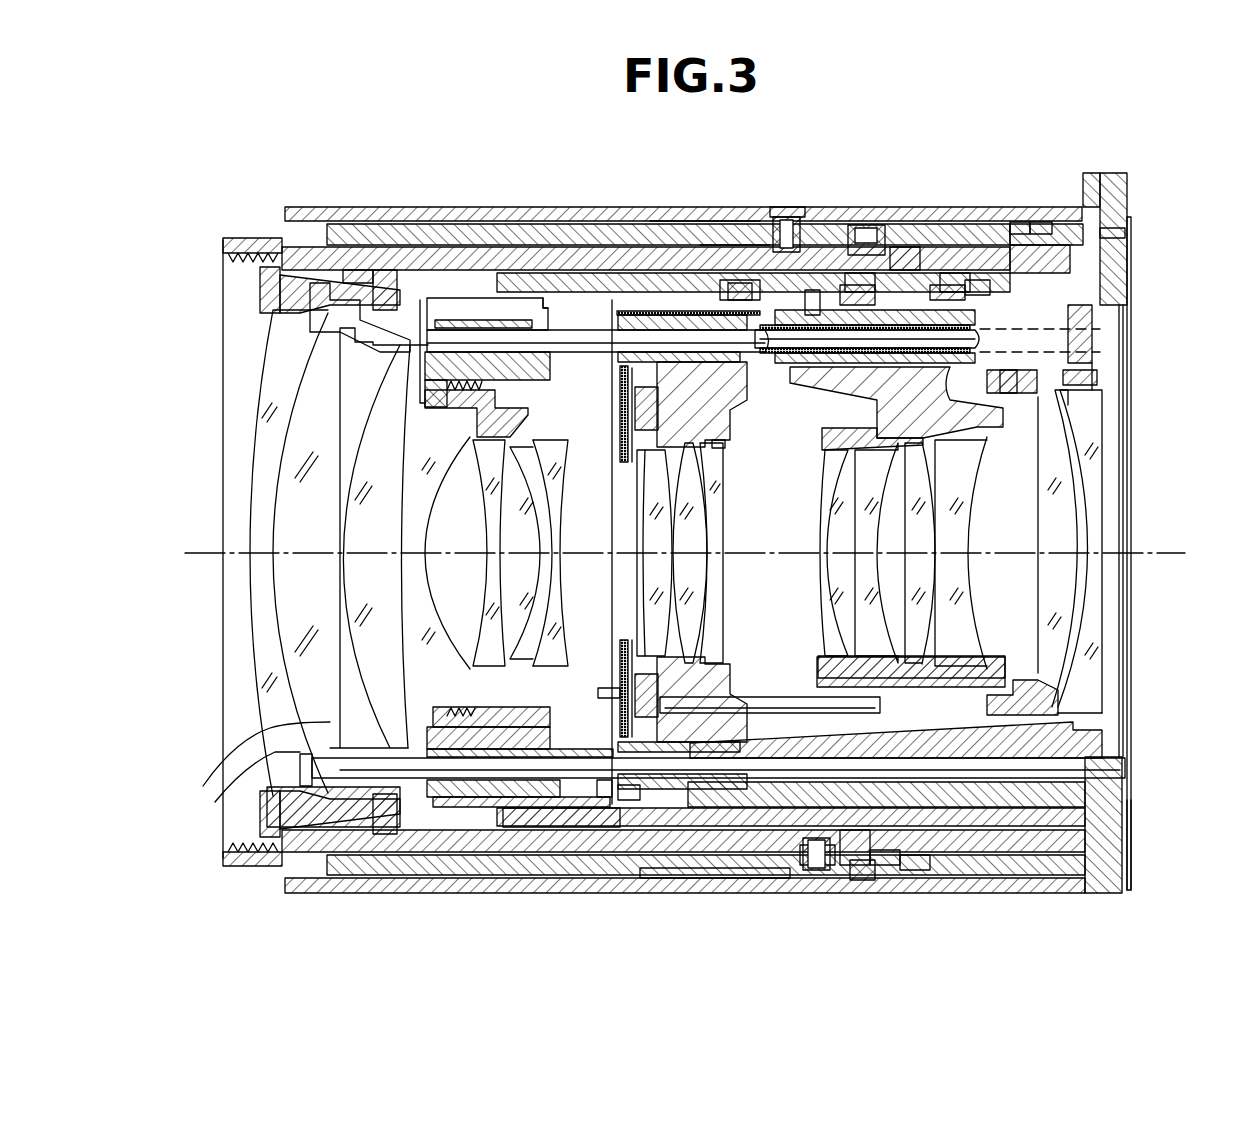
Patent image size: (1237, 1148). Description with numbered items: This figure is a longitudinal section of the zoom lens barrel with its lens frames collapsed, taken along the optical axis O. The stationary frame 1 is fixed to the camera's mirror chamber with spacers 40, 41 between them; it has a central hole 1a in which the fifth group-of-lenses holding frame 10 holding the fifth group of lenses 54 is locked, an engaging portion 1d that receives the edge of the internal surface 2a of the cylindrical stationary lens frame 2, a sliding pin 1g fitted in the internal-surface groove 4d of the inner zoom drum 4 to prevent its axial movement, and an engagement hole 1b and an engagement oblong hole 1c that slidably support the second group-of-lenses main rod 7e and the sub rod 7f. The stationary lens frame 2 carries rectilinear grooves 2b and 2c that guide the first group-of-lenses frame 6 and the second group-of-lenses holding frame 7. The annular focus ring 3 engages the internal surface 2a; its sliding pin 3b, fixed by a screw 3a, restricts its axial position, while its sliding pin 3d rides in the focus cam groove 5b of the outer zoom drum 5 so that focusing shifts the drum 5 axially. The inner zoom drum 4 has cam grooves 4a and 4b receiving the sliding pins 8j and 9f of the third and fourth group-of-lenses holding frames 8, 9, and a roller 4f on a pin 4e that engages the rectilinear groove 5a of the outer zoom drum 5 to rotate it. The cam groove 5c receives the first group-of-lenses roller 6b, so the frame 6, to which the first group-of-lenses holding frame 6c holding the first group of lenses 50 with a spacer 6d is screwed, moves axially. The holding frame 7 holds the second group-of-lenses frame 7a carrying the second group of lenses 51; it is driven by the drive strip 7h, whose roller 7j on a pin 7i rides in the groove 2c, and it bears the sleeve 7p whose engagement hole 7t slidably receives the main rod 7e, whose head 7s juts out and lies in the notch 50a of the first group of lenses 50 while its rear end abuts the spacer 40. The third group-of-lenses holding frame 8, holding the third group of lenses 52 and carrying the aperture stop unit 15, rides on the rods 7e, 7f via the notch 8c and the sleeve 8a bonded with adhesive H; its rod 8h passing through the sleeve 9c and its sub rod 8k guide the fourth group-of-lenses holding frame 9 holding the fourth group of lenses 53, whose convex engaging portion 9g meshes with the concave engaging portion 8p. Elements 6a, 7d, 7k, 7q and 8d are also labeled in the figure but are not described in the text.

The stationary frame 1 is at (1108, 174).
The hole 1a is at (1100, 378).
The engagement hole 1b is at (738, 770).
The engagement oblong hole 1c is at (1100, 312).
The engaging portion 1d is at (1112, 205).
The sliding pin 1g is at (976, 280).
The stationary lens frame 2 is at (1015, 225).
The internal surface 2a is at (1122, 232).
The guiding rectilinear groove 2b is at (700, 218).
The guiding rectilinear groove 2c is at (704, 878).
The focus ring 3 is at (1012, 246).
The screw 3a is at (1042, 224).
The sliding pin 3b is at (1020, 224).
The sliding pin 3d is at (868, 250).
The inner zoom drum 4 is at (522, 226).
The cam groove 4a is at (730, 240).
The cam groove 4b is at (855, 280).
The internal-surface groove 4d is at (952, 280).
The pin 4e is at (878, 862).
The roller 4f is at (915, 866).
The outer zoom drum 5 is at (440, 208).
The rectilinear groove 5a is at (856, 875).
The focus cam groove 5b is at (902, 250).
The cam groove 5c is at (778, 212).
The first group-of-lenses frame 6 is at (318, 247).
The screw 6a is at (787, 230).
The first group-of-lenses roller 6b is at (812, 290).
The first group-of-lenses holding frame 6c is at (265, 240).
The spacer 6d is at (386, 268).
The second group-of-lenses holding frame 7 is at (440, 342).
The second group-of-lenses frame 7a is at (447, 386).
The guide portion 7d is at (470, 300).
The second group-of-lenses main rod 7e is at (575, 757).
The sub rod 7f is at (565, 355).
The second group-of-lenses drive strip 7h is at (800, 855).
The pin 7i is at (815, 868).
The roller 7j is at (850, 865).
The step portion 7k is at (553, 305).
The sleeve 7p is at (565, 810).
The sliding portion 7q is at (487, 800).
The head 7s is at (250, 856).
The engagement hole 7t is at (602, 798).
The third group-of-lenses holding frame 8 is at (728, 420).
The sleeve 8a is at (690, 310).
The notch 8c is at (625, 802).
The shutter plate 8d is at (605, 352).
The rod 8h is at (950, 372).
The sliding pin 8j is at (735, 282).
The sub rod 8k is at (748, 700).
The concave engaging portion 8p is at (725, 450).
The fourth group-of-lenses holding frame 9 is at (990, 430).
The sleeve 9c is at (845, 290).
The sliding pin 9f is at (940, 288).
The convex engaging portion 9g is at (815, 440).
The fifth group-of-lenses holding frame 10 is at (1095, 385).
The aperture stop unit 15 is at (620, 690).
The spacer 40 is at (1136, 250).
The spacer 41 is at (1136, 850).
The first group of lenses 50 is at (252, 602).
The notch 50a is at (208, 786).
The second group of lenses 51 is at (567, 562).
The third group of lenses 52 is at (728, 562).
The fourth group of lenses 53 is at (815, 565).
The fifth group of lenses 54 is at (1105, 565).
The adhesive H is at (640, 300).
The optical axis O is at (215, 553).